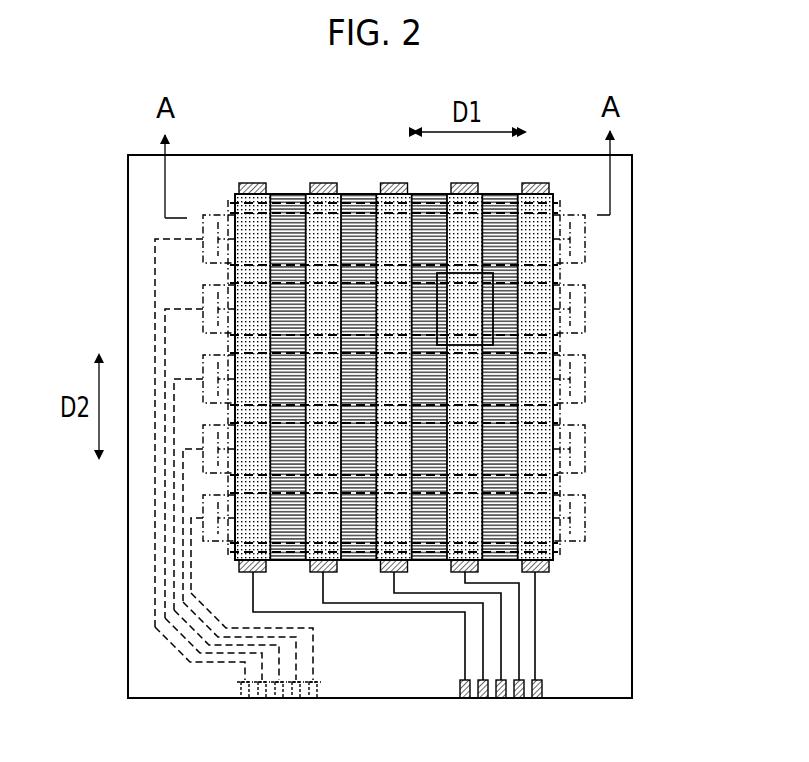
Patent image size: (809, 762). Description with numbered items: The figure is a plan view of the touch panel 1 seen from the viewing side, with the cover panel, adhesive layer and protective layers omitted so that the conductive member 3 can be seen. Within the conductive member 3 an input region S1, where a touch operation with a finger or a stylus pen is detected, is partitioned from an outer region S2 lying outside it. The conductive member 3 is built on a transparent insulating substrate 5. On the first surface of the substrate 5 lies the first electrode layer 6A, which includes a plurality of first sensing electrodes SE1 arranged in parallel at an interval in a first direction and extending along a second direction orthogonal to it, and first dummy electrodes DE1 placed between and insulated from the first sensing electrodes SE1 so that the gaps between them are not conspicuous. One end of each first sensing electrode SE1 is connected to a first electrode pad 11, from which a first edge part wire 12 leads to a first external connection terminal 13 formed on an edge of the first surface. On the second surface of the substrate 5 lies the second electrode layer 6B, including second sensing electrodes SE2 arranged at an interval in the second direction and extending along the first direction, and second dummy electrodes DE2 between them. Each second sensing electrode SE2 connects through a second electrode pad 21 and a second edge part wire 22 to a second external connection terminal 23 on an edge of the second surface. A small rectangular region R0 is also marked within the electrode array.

The touch panel 1 is at (640, 145).
The conductive member 3 is at (612, 430).
The transparent insulating substrate 5 is at (635, 525).
The first electrode layer 6A is at (237, 194).
The second electrode layer 6B is at (573, 230).
The first electrode pads 11 is at (242, 573).
The first edge part wires 12 is at (412, 612).
The first external connection terminals 13 is at (460, 699).
The second electrode pads 21 is at (193, 232).
The second edge part wires 22 is at (155, 572).
The second external connection terminals 23 is at (243, 672).
The first sensing electrodes SE1 is at (268, 194).
The first dummy electrodes DE1 is at (295, 194).
The second sensing electrodes SE2 is at (582, 263).
The second dummy electrodes DE2 is at (582, 273).
The unit region R0 is at (517, 312).
The input region S1 is at (565, 552).
The outer region S2 is at (612, 635).